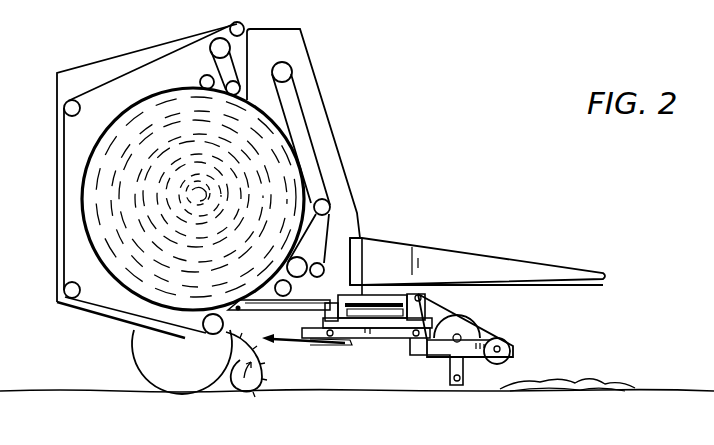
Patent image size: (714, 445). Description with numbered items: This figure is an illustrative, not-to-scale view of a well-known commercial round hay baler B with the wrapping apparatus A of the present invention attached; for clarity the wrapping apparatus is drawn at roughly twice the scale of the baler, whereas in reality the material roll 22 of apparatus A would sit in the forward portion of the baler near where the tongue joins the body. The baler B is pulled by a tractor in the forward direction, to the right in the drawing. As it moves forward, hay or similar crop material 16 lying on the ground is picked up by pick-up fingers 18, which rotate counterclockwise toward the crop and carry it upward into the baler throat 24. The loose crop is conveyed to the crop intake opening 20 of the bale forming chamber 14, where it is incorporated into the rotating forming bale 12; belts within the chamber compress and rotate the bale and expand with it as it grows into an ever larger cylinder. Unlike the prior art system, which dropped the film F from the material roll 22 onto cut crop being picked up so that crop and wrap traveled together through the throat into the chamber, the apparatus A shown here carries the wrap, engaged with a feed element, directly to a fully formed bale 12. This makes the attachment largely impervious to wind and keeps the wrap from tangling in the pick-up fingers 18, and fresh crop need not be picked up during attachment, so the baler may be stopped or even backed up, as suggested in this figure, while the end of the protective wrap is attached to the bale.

The forming bale 12 is at (277, 146).
The bale forming chamber 14 is at (290, 51).
The crop material 16 is at (622, 380).
The pick-up fingers 18 is at (256, 382).
The crop intake opening 20 is at (280, 298).
The material roll 22 is at (460, 318).
The baler throat 24 is at (257, 316).
The wrapping apparatus A is at (571, 318).
The round hay baler B is at (384, 65).
The film F is at (481, 321).